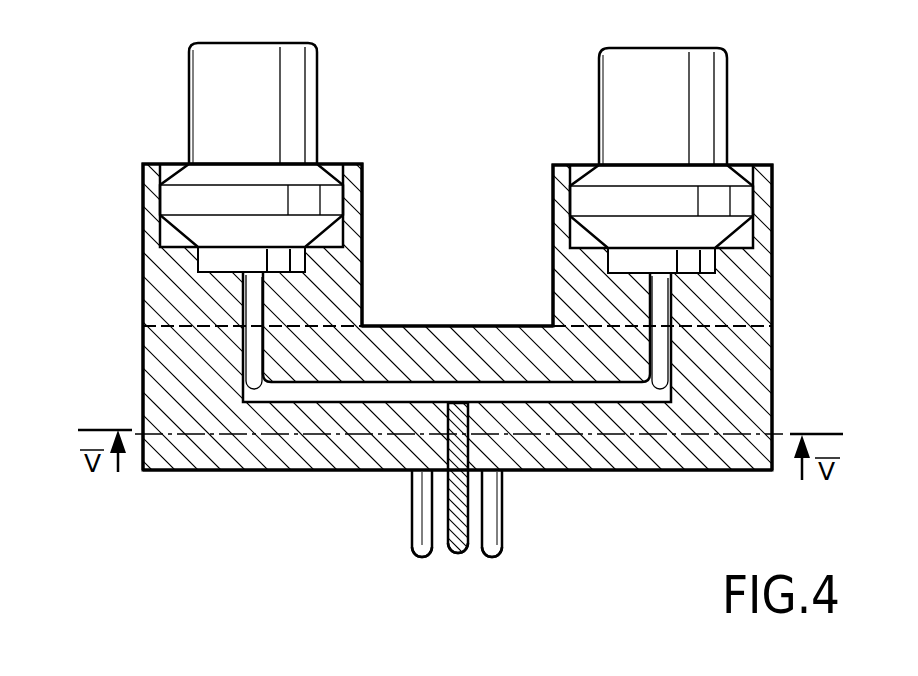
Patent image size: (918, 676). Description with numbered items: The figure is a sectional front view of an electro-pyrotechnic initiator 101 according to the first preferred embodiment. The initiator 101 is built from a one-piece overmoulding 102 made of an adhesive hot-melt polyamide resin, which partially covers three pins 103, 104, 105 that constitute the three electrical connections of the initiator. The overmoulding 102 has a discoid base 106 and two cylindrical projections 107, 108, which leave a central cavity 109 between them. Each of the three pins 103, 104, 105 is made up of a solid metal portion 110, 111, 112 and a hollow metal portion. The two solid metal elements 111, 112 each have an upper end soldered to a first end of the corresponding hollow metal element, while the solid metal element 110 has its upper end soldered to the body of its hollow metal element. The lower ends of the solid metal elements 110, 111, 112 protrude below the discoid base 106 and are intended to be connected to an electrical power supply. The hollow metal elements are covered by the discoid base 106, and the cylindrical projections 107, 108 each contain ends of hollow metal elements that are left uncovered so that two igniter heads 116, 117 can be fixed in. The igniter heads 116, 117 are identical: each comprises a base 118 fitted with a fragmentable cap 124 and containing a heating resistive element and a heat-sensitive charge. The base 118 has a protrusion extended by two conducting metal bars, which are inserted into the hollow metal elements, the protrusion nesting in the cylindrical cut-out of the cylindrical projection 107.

The electro-pyrotechnic initiator 101 is at (211, 479).
The one-piece overmoulding 102 is at (661, 478).
The pin 103 is at (458, 554).
The pin 104 is at (418, 553).
The pin 105 is at (493, 554).
The discoid base 106 is at (272, 453).
The cylindrical projection 107 is at (150, 290).
The cylindrical projection 108 is at (758, 298).
The central cavity 109 is at (466, 325).
The solid metal portion 110 is at (368, 338).
The solid metal portion 111 is at (384, 544).
The solid metal portion 112 is at (541, 537).
The igniter head 116 is at (266, 136).
The igniter head 117 is at (728, 117).
The base 118 is at (330, 204).
The fragmentable cap 124 is at (278, 67).